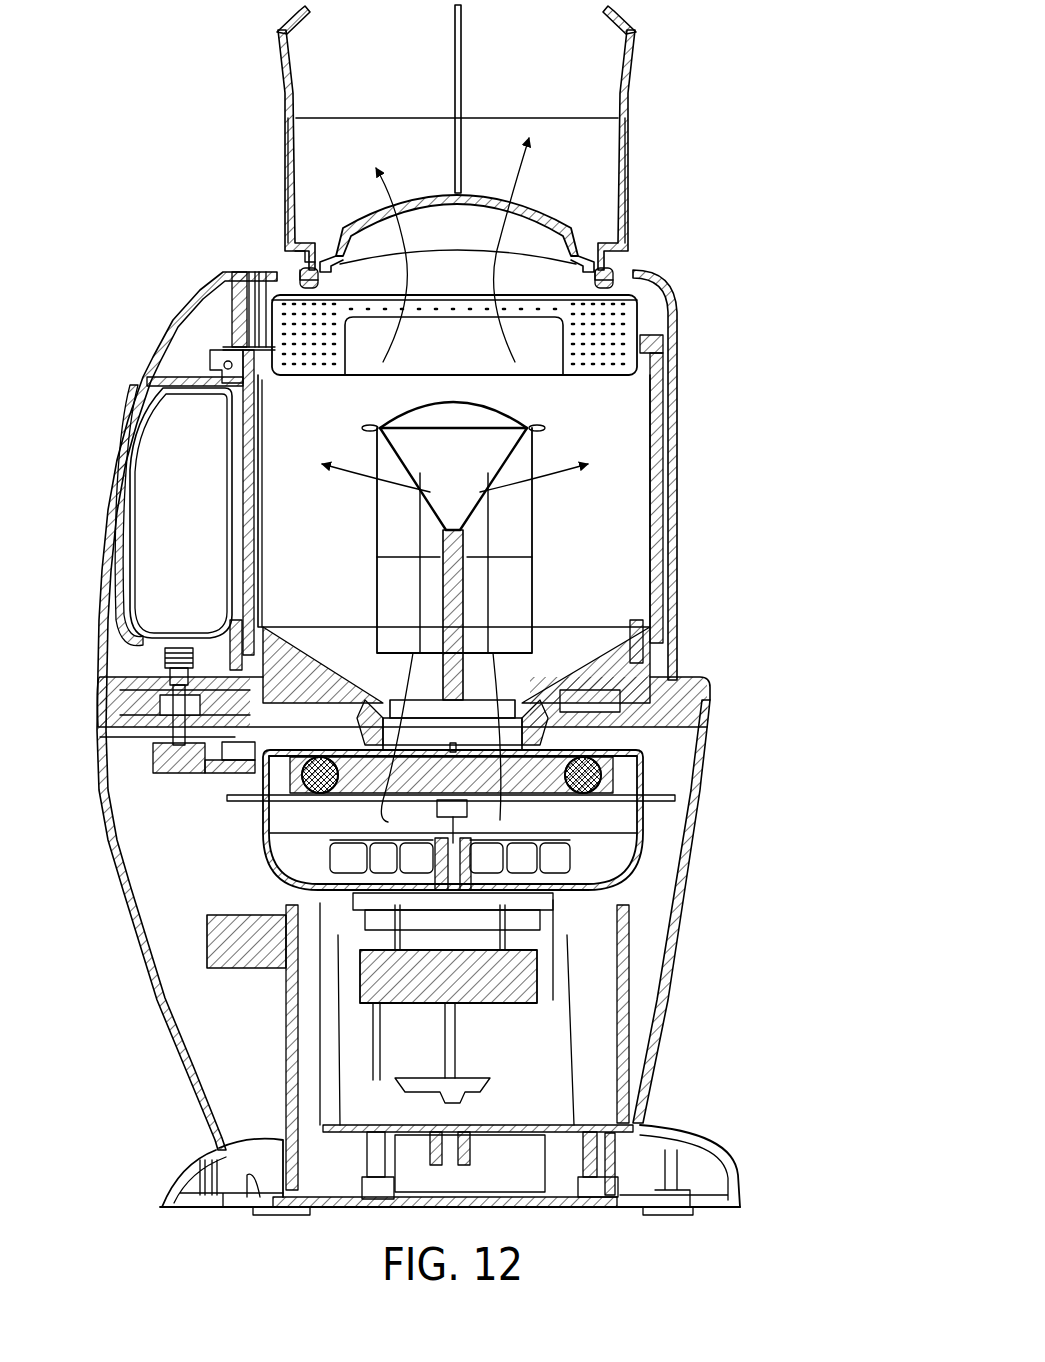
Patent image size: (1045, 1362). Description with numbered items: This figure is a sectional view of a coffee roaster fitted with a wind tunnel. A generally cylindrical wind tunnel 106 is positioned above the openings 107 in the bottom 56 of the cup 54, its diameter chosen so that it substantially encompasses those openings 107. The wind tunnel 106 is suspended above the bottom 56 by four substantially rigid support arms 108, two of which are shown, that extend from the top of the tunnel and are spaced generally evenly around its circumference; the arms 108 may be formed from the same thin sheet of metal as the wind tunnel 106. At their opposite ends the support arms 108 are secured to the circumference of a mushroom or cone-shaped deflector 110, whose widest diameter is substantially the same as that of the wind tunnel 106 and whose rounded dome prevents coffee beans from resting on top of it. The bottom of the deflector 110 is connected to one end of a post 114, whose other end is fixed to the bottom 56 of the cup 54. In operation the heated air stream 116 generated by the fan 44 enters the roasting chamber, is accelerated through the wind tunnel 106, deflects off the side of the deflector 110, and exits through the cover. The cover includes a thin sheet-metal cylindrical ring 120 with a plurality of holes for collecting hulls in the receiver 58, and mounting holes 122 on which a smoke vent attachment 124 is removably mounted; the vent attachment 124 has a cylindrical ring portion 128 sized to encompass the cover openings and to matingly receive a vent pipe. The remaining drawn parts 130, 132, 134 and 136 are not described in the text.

The fan 44 is at (557, 860).
The cup 54 is at (602, 640).
The bottom 56 is at (428, 698).
The receiver 58 is at (273, 320).
The wind tunnel 106 is at (505, 582).
The openings 107 is at (478, 697).
The support arms 108 is at (533, 493).
The deflector 110 is at (493, 442).
The post 114 is at (443, 583).
The heated air stream 116 is at (356, 473).
The cylindrical ring 120 is at (612, 312).
The mounting holes 122 is at (613, 262).
The smoke vent attachment 124 is at (457, 183).
The cylindrical ring portion 128 is at (629, 207).
The lid side wall 130 is at (285, 100).
The lid flange 132 is at (290, 262).
The water level line 134 is at (353, 117).
The lid tabs 136 is at (279, 33).